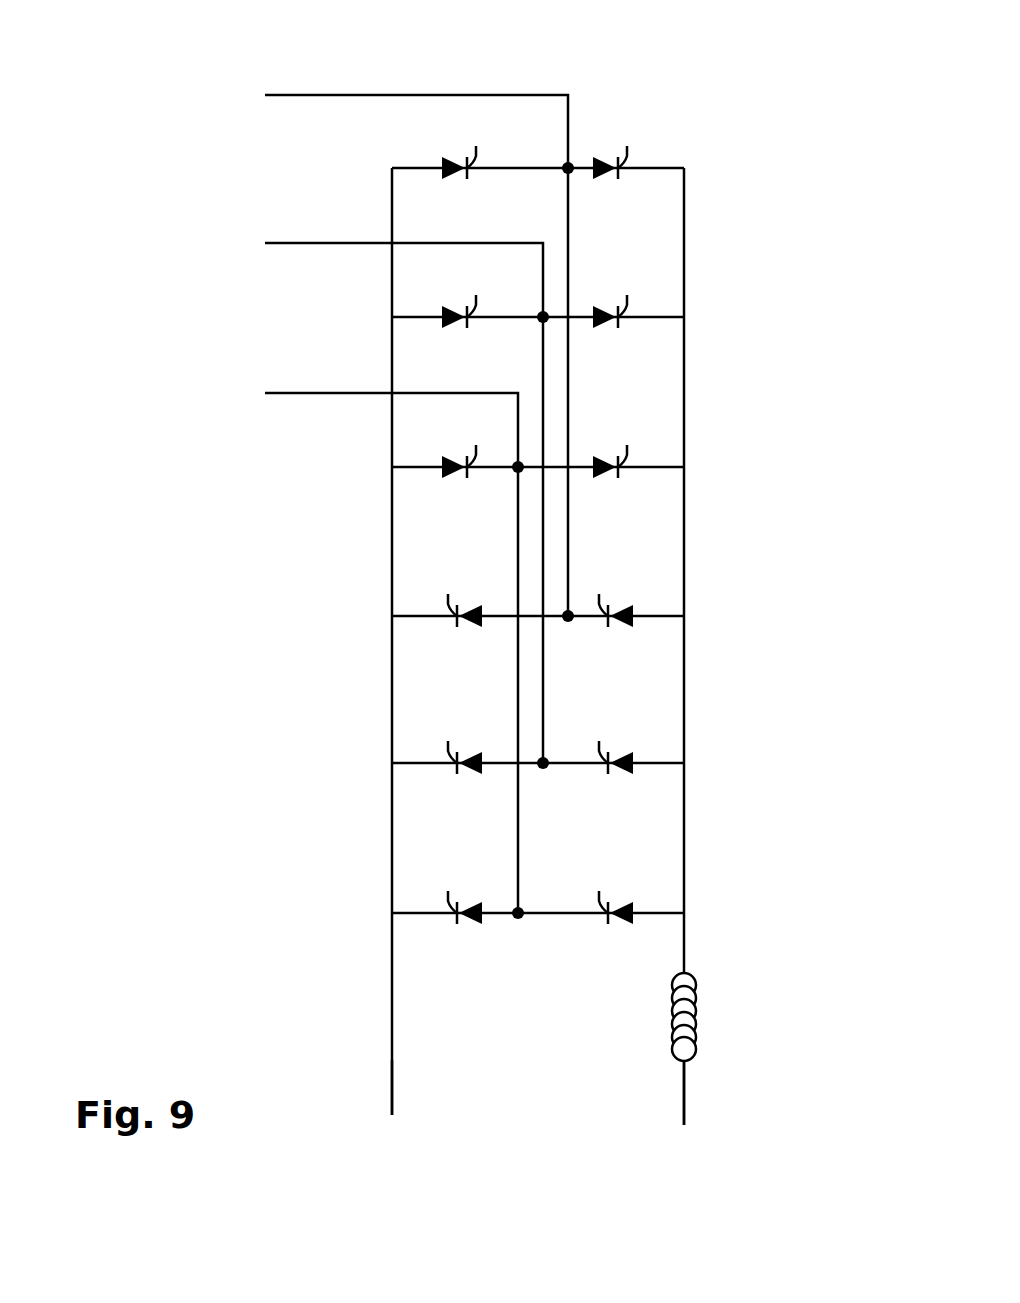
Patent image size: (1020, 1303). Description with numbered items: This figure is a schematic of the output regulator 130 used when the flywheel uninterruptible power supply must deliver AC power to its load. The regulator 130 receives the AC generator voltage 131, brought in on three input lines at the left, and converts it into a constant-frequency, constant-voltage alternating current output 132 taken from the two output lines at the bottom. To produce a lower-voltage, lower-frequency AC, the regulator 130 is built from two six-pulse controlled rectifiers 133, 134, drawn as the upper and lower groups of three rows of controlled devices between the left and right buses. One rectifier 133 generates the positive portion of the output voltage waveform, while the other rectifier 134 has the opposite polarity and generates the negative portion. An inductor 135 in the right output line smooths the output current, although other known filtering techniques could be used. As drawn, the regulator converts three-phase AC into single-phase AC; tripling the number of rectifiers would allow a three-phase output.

The output regulator 130 is at (478, 44).
The AC generator voltage 131 is at (110, 258).
The alternating current output 132 is at (533, 1220).
The 6 pulse controlled rectifier 133 is at (690, 160).
The 6 pulse controlled rectifier 134 is at (705, 912).
The inductor 135 is at (697, 1017).